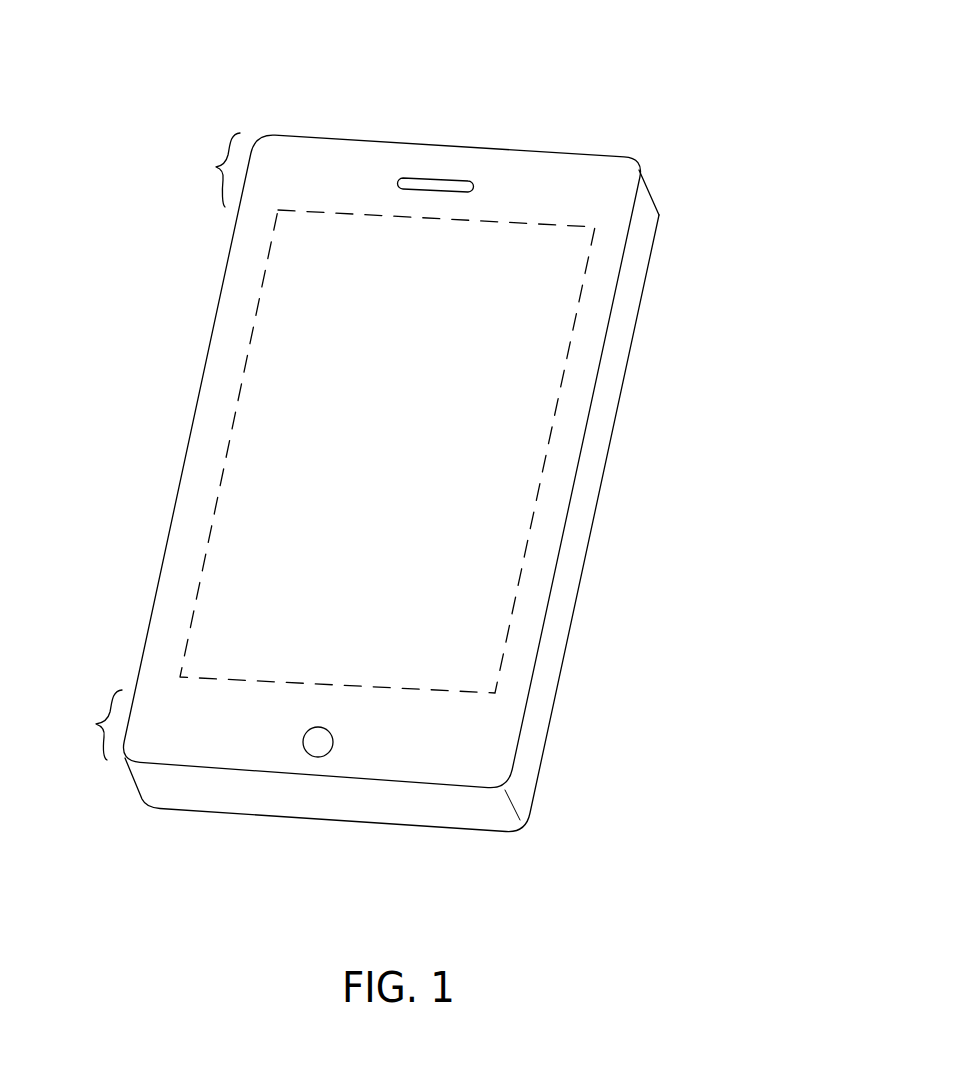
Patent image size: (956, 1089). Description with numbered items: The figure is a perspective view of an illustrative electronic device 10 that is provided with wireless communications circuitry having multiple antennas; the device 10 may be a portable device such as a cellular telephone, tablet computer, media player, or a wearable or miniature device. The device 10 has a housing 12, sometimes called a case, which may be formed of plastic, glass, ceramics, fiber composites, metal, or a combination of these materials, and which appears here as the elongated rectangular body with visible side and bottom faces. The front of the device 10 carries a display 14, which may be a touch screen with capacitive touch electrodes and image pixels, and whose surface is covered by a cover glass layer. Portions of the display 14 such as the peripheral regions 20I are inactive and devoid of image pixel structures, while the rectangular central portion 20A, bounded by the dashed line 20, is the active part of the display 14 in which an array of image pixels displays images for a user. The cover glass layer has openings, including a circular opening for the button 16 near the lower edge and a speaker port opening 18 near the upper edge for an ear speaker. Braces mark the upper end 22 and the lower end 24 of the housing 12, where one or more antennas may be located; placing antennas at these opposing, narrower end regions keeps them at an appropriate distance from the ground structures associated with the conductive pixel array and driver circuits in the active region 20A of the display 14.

The electronic device 10 is at (722, 74).
The housing 12 is at (630, 292).
The display 14 is at (530, 443).
The button 16 is at (318, 757).
The speaker port opening 18 is at (428, 178).
The dashed line 20 is at (222, 477).
The rectangular central portion 20A is at (235, 565).
The peripheral regions 20I is at (523, 180).
The upper end 22 is at (210, 170).
The lower end 24 is at (91, 725).